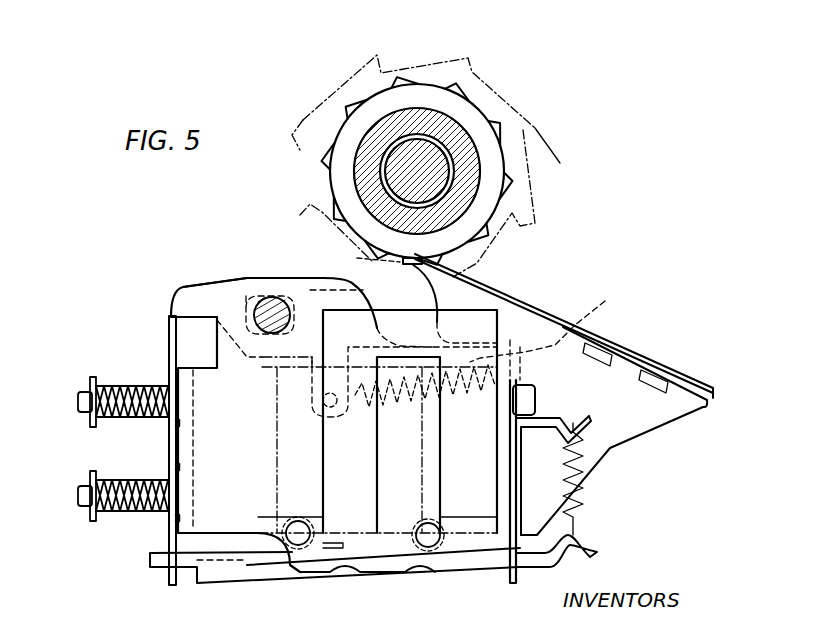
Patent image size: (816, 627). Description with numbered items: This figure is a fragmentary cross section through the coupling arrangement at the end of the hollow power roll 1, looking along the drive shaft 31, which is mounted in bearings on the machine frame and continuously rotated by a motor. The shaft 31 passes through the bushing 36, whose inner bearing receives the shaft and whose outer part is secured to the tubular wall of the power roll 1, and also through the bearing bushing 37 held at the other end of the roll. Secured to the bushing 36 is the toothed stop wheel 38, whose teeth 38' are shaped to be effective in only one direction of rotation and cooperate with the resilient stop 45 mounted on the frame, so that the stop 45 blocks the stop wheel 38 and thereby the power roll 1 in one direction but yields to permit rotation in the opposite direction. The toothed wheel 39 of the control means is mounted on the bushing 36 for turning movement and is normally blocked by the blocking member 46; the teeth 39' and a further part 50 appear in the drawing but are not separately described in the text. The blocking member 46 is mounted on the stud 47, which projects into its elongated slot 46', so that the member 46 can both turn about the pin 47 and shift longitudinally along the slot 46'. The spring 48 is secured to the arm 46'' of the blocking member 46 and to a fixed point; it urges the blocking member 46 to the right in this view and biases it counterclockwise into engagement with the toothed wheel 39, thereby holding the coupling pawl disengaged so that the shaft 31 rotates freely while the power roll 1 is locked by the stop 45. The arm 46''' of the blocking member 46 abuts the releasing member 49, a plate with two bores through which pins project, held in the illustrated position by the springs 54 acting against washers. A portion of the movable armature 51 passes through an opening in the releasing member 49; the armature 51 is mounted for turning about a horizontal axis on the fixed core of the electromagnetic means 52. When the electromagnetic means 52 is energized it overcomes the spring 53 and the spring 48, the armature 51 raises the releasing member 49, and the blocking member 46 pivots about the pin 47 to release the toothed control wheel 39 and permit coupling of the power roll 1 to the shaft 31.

The power roll 1 is at (554, 155).
The drive shaft 31 is at (417, 142).
The bushing 36 is at (453, 127).
The bearing bushing 37 is at (380, 186).
The toothed stop wheel 38 is at (318, 188).
The toothed wheel 39 is at (417, 91).
The teeth 38' is at (360, 261).
The pawl position 39' is at (497, 203).
The resilient stop 45 is at (530, 295).
The blocking member 46 is at (450, 300).
The elongated slot 46' is at (263, 285).
The arm 46'' is at (361, 390).
The arm 46''' is at (203, 275).
The stud 47 is at (280, 297).
The spring 48 is at (588, 407).
The releasing member 49 is at (170, 376).
The support plate 50 is at (502, 562).
The movable armature 51 is at (211, 582).
The electromagnetic means 52 is at (392, 510).
The spring 53 is at (580, 517).
The springs 54 is at (113, 493).